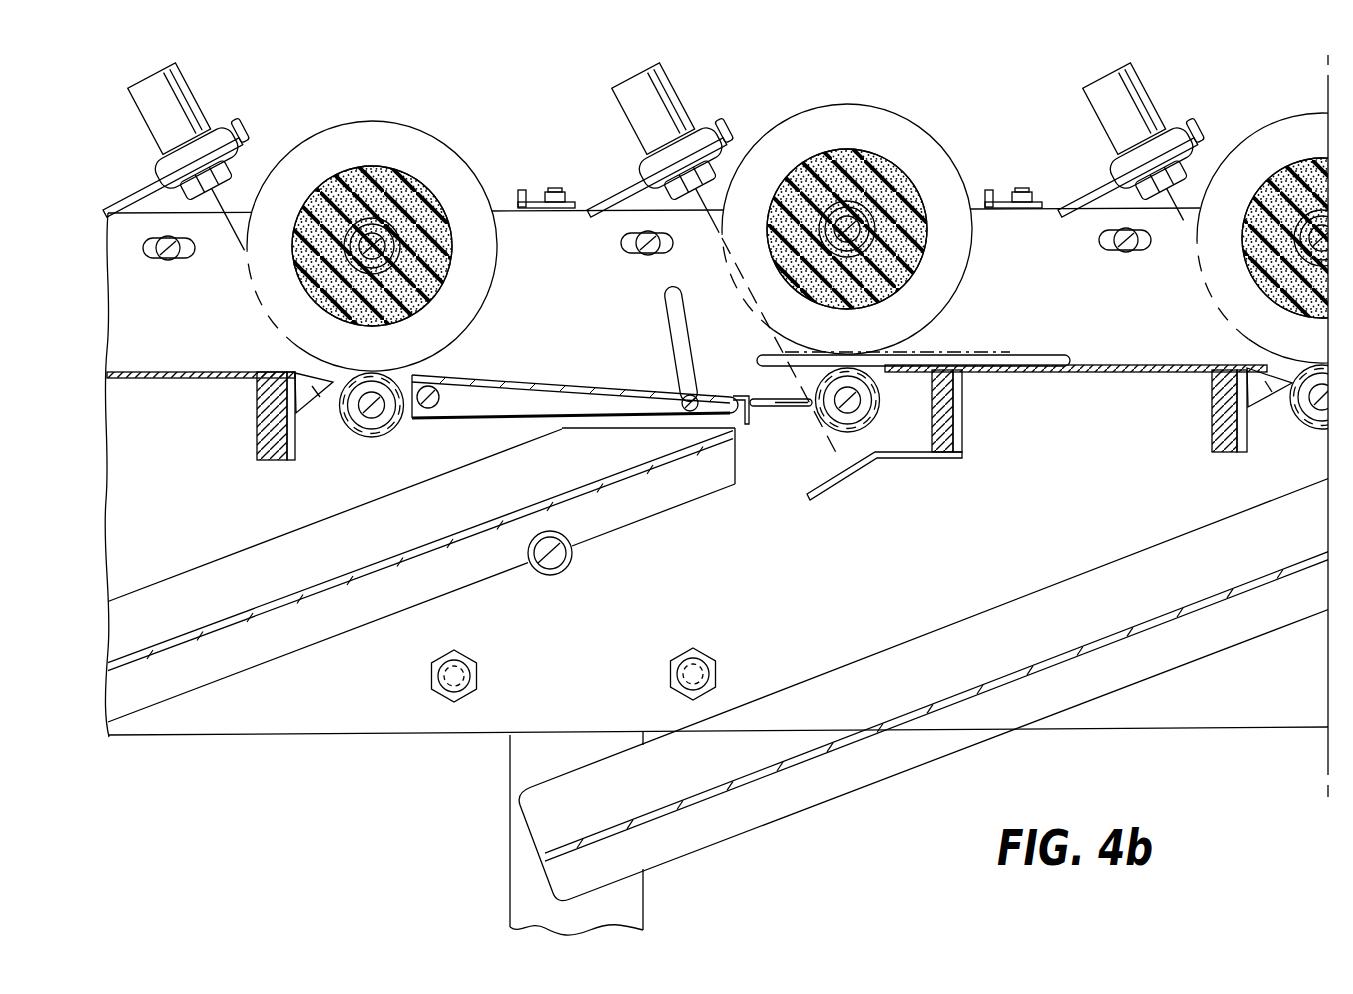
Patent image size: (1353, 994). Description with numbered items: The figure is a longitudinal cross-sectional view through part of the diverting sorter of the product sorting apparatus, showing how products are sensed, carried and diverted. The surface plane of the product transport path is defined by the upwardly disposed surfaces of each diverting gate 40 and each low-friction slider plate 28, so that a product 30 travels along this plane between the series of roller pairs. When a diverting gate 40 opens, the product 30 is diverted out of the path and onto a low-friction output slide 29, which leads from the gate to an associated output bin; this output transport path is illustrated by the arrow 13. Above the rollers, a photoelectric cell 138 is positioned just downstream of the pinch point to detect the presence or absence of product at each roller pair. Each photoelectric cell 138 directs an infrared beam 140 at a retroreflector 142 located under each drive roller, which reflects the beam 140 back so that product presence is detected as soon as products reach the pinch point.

The arrow illustrating output transport path 13 is at (228, 520).
The low-friction slider plate 28 is at (1153, 372).
The low-friction output slide 29 is at (818, 800).
The product 30 is at (1007, 352).
The diverting gate 40 is at (543, 395).
The photoelectric cell 138 is at (668, 84).
The infrared beam 140 is at (1184, 247).
The retroreflector 142 is at (1270, 405).